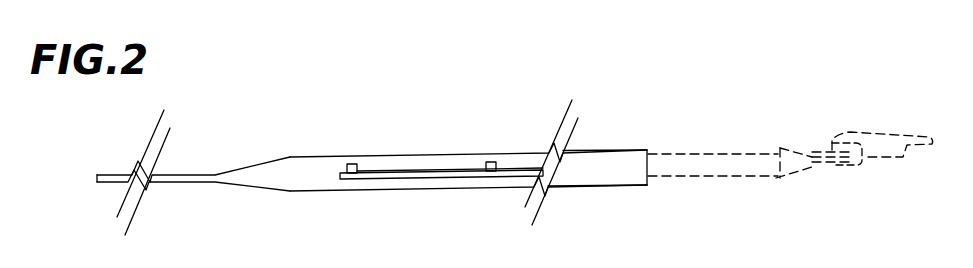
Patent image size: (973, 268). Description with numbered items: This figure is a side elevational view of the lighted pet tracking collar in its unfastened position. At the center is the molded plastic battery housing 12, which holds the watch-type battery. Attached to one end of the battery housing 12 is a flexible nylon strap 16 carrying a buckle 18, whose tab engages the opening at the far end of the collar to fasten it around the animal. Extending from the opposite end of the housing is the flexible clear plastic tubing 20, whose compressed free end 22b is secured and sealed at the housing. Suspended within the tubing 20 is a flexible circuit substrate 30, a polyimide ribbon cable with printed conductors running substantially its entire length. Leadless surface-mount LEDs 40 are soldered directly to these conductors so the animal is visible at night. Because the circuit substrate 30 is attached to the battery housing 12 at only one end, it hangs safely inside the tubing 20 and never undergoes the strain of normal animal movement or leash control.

The battery housing 12 is at (700, 154).
The flexible nylon strap 16 is at (835, 166).
The buckle 18 is at (868, 132).
The flexible clear plastic tubing 20 is at (415, 156).
The compressed free end of tubing 22b is at (620, 150).
The circuit substrate 30 is at (430, 185).
The LED 40 is at (352, 164).